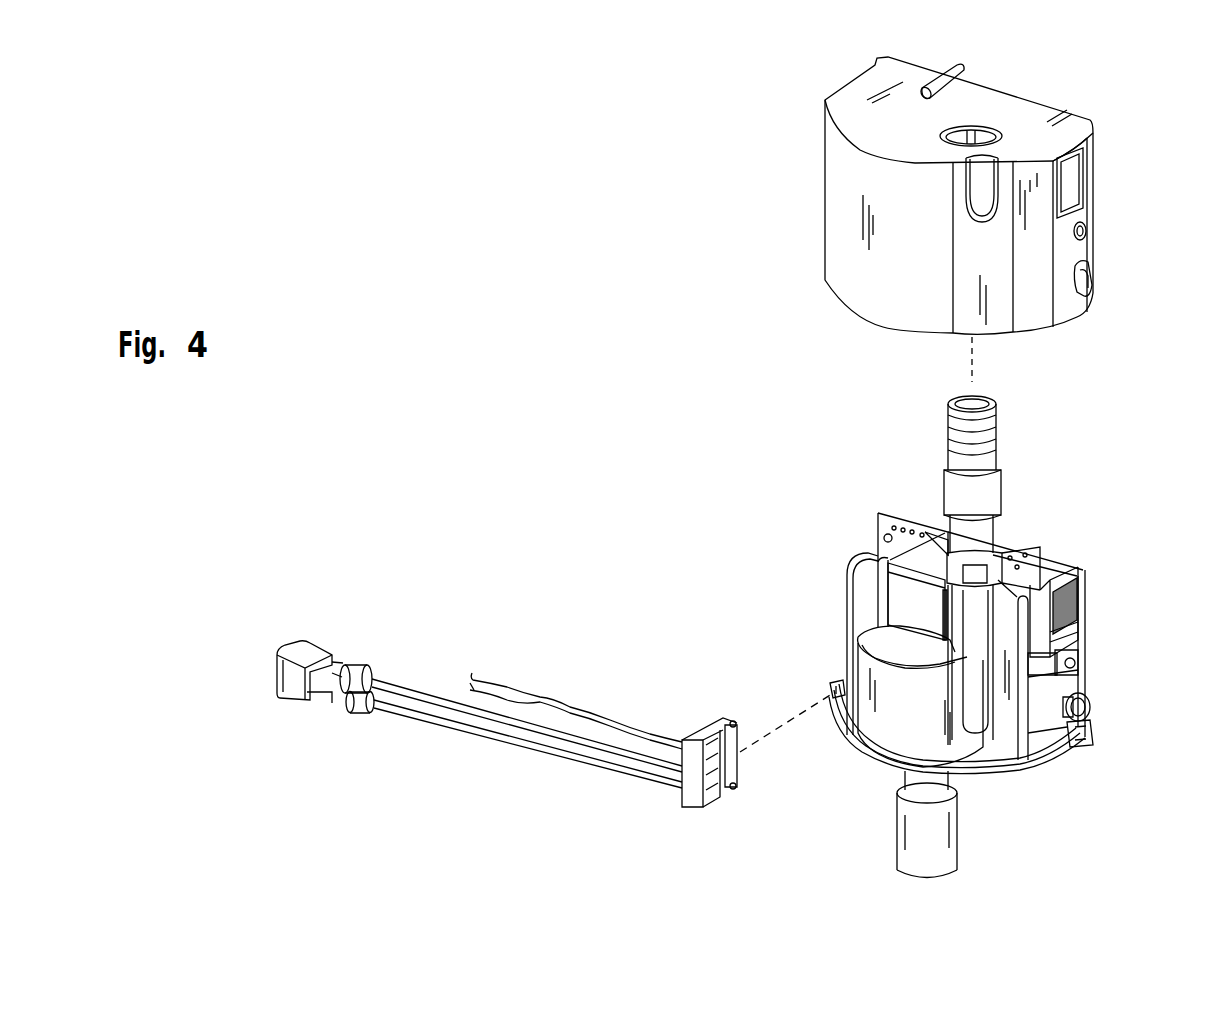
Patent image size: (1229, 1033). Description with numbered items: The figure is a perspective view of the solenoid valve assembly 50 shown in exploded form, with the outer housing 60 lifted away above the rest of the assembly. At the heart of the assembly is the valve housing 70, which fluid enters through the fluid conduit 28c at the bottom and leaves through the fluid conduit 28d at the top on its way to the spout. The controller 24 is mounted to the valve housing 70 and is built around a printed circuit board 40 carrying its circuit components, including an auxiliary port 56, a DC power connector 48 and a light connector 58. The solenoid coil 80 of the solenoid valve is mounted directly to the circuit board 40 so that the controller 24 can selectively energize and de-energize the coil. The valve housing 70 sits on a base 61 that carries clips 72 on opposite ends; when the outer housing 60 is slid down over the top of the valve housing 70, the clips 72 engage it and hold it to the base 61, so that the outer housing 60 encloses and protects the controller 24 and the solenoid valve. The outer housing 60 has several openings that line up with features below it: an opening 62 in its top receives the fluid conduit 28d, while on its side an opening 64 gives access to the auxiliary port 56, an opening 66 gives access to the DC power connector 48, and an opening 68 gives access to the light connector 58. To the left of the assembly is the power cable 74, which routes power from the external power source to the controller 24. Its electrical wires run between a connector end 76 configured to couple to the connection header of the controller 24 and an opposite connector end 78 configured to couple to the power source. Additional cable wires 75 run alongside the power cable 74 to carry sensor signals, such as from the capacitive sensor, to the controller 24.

The controller 24 is at (1105, 572).
The fluid conduit 28c is at (887, 828).
The fluid conduit 28d is at (1008, 432).
The printed circuit board 40 is at (912, 515).
The DC power connector 48 is at (1087, 655).
The solenoid valve assembly 50 is at (478, 285).
The auxiliary port 56 is at (1047, 573).
The light connector 58 is at (1097, 697).
The outer housing 60 is at (800, 182).
The base 61 is at (1005, 780).
The opening 62 is at (1000, 133).
The opening 64 is at (1092, 178).
The opening 66 is at (1090, 233).
The opening 68 is at (1094, 266).
The valve housing 70 is at (885, 728).
The clips 72 is at (828, 672).
The power cable 74 is at (477, 745).
The cable wires 75 is at (525, 684).
The connector end 76 is at (700, 718).
The connector end 78 is at (295, 630).
The solenoid coil 80 is at (884, 537).